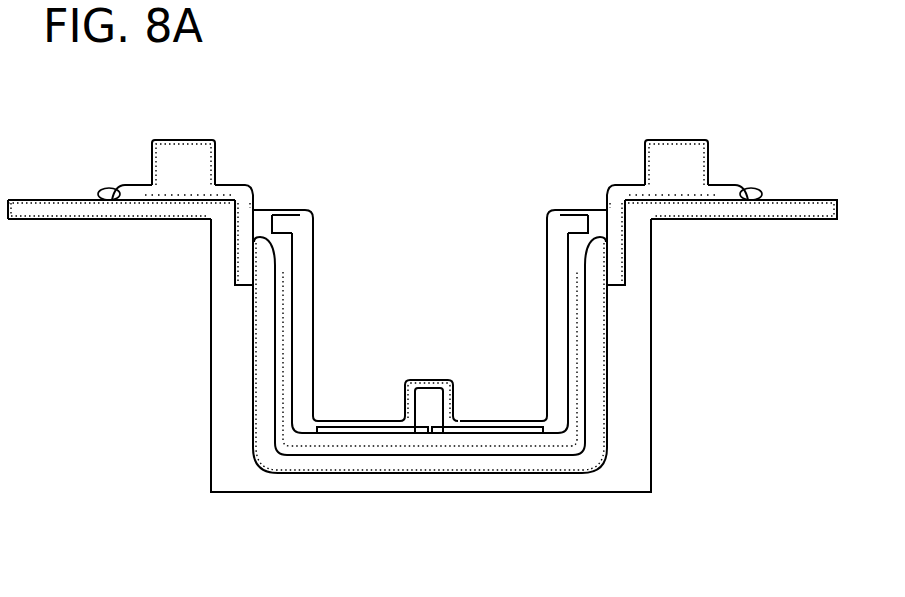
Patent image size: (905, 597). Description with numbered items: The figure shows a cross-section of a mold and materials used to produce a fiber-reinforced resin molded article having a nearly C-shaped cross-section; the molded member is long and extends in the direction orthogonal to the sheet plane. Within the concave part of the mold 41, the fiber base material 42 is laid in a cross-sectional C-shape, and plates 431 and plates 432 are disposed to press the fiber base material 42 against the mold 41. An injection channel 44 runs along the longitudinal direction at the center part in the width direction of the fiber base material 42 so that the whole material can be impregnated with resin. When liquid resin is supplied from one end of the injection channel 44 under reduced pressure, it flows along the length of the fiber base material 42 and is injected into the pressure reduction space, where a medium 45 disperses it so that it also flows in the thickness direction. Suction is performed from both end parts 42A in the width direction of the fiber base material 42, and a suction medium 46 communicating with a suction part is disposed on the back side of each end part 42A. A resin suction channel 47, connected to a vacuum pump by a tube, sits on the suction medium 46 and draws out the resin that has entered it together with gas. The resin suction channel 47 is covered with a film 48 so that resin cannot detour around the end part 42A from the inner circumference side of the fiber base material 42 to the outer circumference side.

The mold 41 is at (258, 378).
The fiber base material 42 is at (430, 310).
The end part 42A is at (293, 243).
The plate 431 is at (372, 420).
The plate 432 is at (317, 288).
The injection channel 44 is at (428, 386).
The medium 45 is at (468, 455).
The suction medium 46 is at (240, 268).
The resin suction channel 47 is at (193, 141).
The film 48 is at (257, 200).